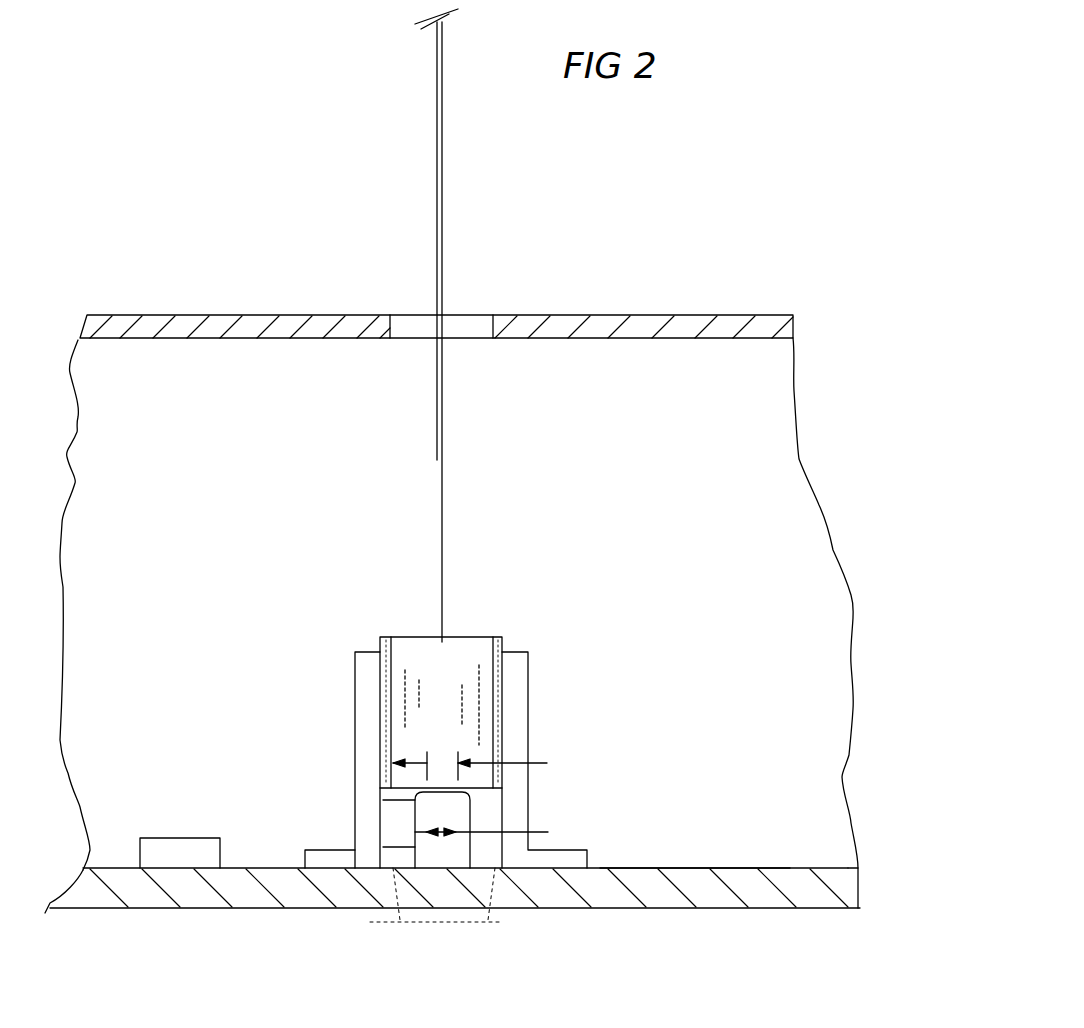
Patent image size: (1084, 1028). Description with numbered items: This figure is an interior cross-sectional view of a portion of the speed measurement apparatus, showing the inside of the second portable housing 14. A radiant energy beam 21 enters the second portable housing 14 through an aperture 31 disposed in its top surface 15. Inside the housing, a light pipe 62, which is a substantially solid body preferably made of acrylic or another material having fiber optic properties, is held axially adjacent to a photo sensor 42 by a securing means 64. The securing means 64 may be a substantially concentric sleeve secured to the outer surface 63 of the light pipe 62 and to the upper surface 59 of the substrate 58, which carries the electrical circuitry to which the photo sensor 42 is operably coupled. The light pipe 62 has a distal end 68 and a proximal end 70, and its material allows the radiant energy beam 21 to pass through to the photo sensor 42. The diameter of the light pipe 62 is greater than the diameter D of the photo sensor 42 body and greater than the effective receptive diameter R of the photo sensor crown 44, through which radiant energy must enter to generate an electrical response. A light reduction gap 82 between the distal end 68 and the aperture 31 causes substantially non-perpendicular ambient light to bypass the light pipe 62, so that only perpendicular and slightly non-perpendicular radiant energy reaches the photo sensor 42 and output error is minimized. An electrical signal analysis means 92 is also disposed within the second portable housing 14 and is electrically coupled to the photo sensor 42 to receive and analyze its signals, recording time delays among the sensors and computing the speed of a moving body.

The second portable housing 14 is at (220, 305).
The top surface 15 is at (290, 315).
The aperture 31 is at (492, 318).
The light reduction gap 82 is at (340, 431).
The radiant energy beam 21 is at (442, 508).
The light pipe 62 is at (506, 638).
The outer surface 63 is at (380, 645).
The securing means 64 is at (355, 713).
The distal end 68 is at (407, 637).
The proximal end 70 is at (472, 795).
The photo sensor crown 44 is at (383, 800).
The photo sensor 42 is at (387, 847).
The electrical signal analysis means 92 is at (160, 838).
The substrate 58 is at (755, 910).
The upper surface 59 is at (693, 868).